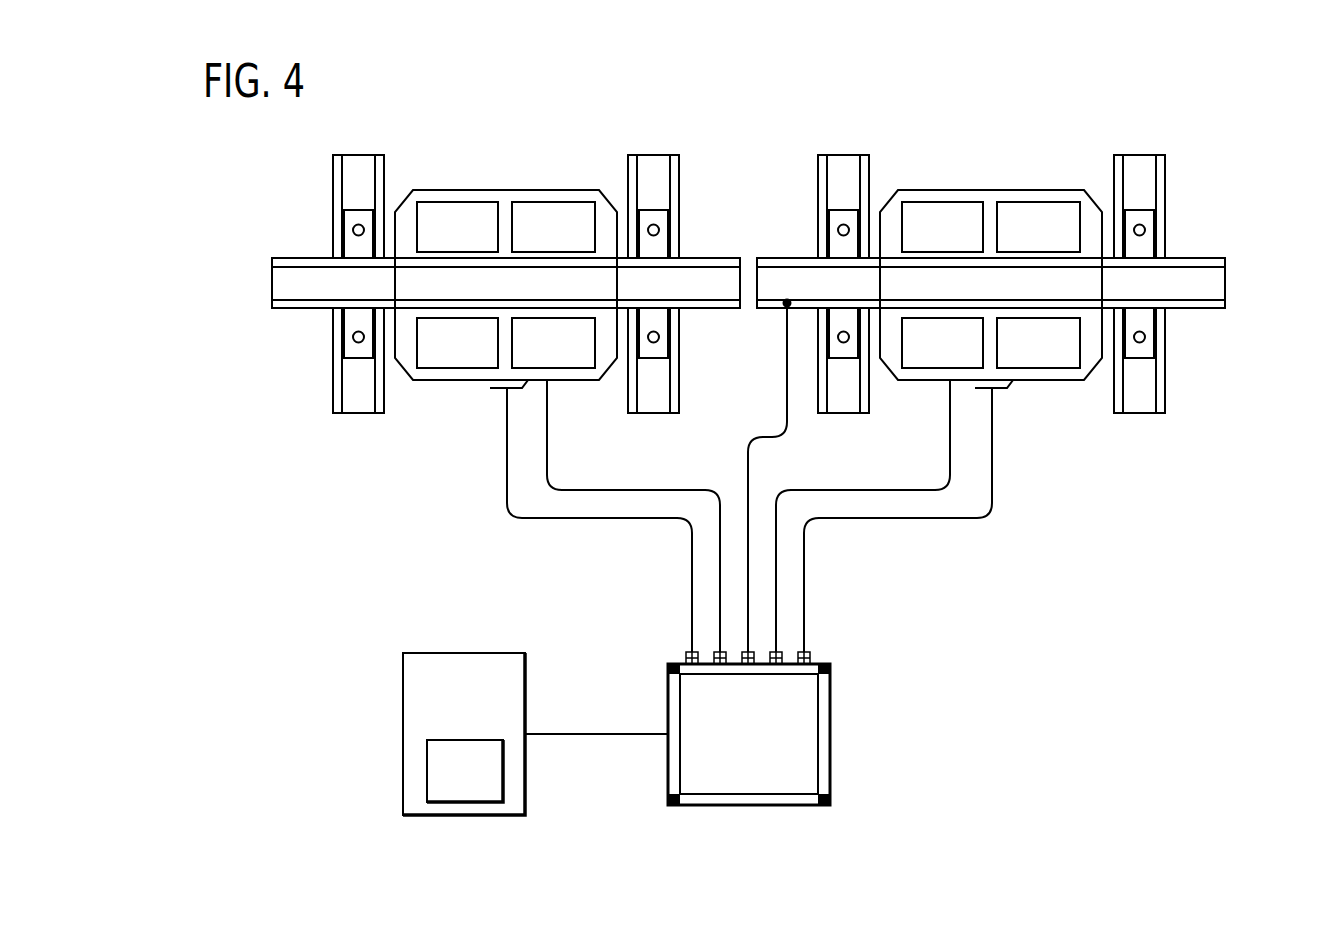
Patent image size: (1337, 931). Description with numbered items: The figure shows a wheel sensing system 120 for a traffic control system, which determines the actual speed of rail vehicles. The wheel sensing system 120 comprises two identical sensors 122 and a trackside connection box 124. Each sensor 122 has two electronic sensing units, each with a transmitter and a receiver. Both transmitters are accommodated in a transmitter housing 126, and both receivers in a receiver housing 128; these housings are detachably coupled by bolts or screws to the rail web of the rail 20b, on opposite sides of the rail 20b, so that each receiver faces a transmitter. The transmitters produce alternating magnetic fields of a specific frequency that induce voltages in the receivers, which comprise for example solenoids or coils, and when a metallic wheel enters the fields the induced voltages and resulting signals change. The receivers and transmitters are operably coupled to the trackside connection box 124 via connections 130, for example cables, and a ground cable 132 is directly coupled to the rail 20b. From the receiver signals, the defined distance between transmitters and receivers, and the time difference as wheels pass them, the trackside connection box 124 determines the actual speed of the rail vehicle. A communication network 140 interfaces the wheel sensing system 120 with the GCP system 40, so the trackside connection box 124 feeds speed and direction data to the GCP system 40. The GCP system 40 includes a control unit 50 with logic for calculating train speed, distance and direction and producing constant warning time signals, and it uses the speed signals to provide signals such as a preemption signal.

The wheel sensing system 120 is at (955, 98).
The rail 20b is at (1226, 288).
The sensor 122 is at (606, 198).
The receiver housing 128 is at (407, 220).
The transmitter housing 126 is at (407, 348).
The connections 130 is at (645, 488).
The ground cable 132 is at (747, 458).
The trackside connection box 124 is at (805, 757).
The communication network 140 is at (620, 733).
The GCP system 40 is at (430, 734).
The control unit 50 is at (483, 787).